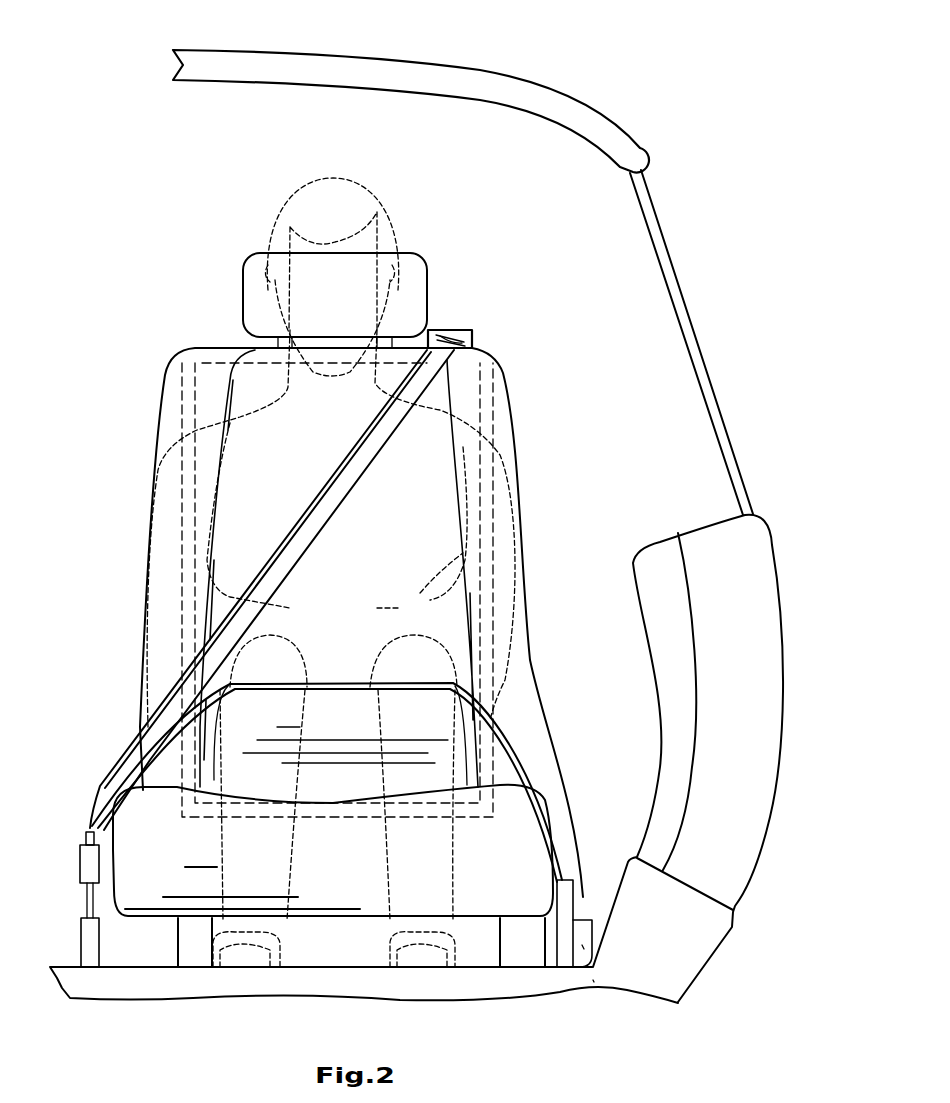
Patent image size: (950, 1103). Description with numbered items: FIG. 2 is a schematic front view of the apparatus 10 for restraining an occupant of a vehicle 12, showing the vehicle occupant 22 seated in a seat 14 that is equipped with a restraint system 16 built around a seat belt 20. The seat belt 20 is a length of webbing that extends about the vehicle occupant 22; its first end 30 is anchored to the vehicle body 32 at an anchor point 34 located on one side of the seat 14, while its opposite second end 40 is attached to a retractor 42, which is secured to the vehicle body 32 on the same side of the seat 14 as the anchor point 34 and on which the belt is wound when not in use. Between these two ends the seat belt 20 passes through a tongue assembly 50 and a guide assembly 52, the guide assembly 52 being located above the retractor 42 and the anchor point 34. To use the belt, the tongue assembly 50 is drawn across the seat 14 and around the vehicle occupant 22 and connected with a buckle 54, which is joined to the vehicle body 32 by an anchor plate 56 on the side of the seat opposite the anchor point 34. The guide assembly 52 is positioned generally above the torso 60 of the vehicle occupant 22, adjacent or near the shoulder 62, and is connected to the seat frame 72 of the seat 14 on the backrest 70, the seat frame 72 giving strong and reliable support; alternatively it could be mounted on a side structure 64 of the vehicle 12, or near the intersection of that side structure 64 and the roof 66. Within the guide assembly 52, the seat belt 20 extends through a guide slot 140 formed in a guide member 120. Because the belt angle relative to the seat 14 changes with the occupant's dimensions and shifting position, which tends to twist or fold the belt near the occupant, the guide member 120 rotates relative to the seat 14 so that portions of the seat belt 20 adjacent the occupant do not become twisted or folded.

The apparatus 10 is at (130, 414).
The vehicle 12 is at (683, 143).
The seat 14 is at (167, 645).
The restraint system 16 is at (588, 354).
The seat belt 20 is at (290, 545).
The vehicle occupant 22 is at (260, 453).
The first end 30 is at (577, 855).
The vehicle body 32 is at (593, 980).
The anchor point 34 is at (566, 963).
The second end 40 is at (583, 890).
The retractor 42 is at (585, 947).
The tongue assembly 50 is at (85, 838).
The guide assembly 52 is at (473, 333).
The buckle 54 is at (88, 867).
The anchor plate 56 is at (93, 944).
The torso 60 is at (405, 533).
The shoulder 62 is at (463, 447).
The side structure 64 is at (748, 580).
The roof 66 is at (465, 82).
The backrest 70 is at (500, 703).
The seat frame 72 is at (483, 478).
The guide member 120 is at (458, 337).
The guide slot 140 is at (450, 328).